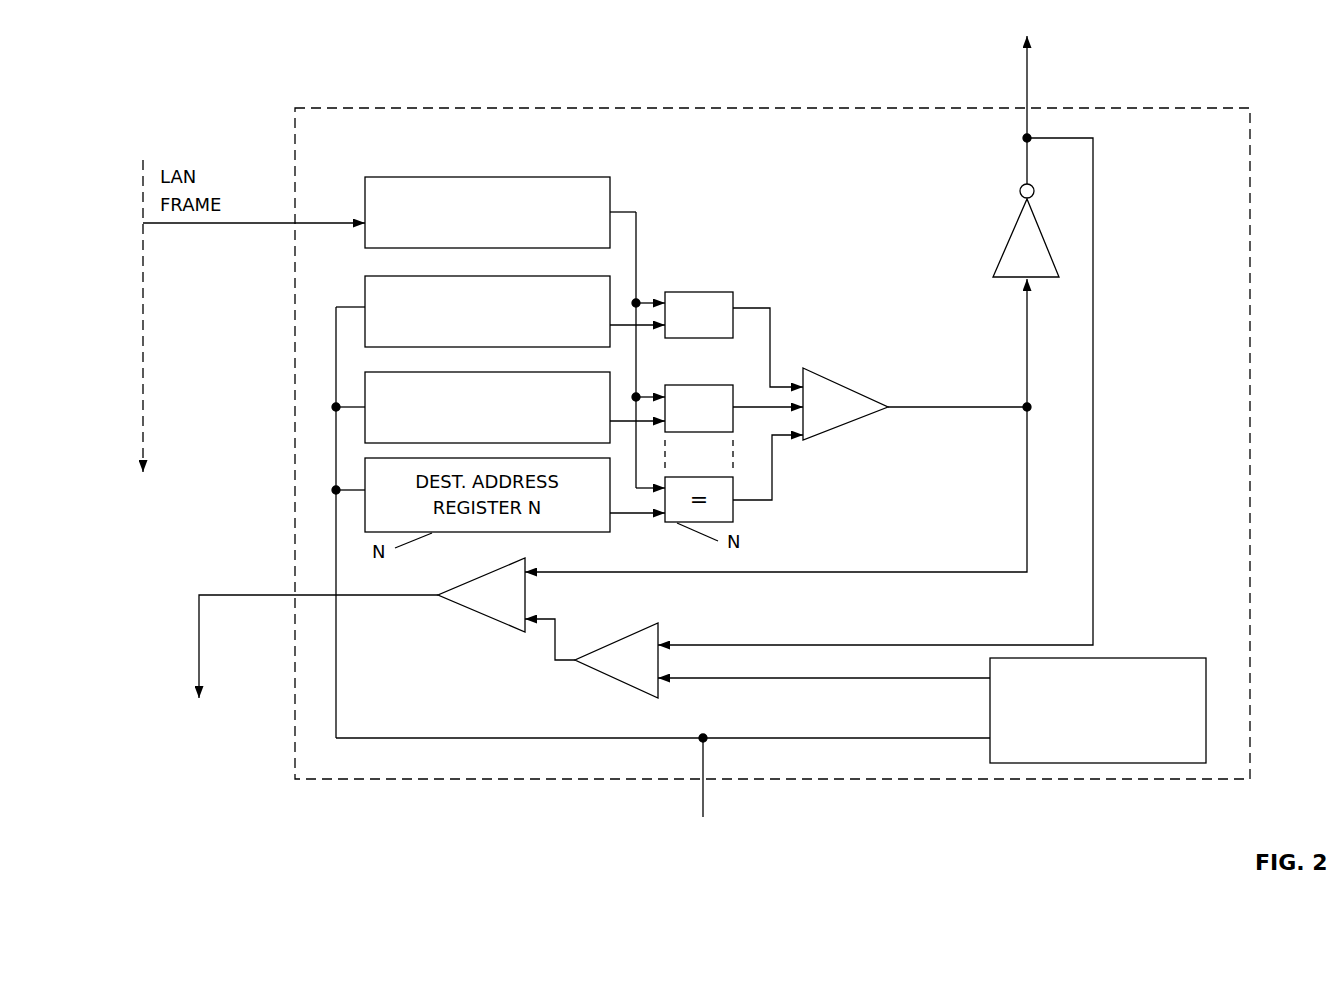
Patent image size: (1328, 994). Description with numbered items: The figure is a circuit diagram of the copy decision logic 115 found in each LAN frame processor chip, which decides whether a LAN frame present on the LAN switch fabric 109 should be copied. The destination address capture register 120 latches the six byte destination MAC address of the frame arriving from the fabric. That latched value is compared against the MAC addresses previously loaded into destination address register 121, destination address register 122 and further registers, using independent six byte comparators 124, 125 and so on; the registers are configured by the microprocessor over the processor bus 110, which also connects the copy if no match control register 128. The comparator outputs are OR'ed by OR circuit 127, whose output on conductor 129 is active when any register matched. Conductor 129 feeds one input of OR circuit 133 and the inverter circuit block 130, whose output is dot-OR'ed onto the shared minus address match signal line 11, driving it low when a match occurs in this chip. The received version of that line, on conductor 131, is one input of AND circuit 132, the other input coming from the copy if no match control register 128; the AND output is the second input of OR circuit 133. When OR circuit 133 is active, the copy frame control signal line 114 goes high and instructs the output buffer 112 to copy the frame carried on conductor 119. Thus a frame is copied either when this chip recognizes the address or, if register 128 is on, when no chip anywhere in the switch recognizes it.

The address match signal line 11 is at (1027, 100).
The LAN switch fabric 109 is at (174, 99).
The processor bus 110 is at (701, 797).
The output buffer 112 is at (190, 660).
The copy frame control signal line 114 is at (200, 670).
The copy decision logic 115 is at (822, 107).
The conductor 119 is at (146, 318).
The destination address capture register 120 is at (565, 178).
The destination address register 1 121 is at (400, 276).
The destination address register 2 122 is at (420, 371).
The comparator 124 is at (690, 291).
The comparator 125 is at (680, 384).
The OR circuit 127 is at (835, 437).
The copy if no match control register 128 is at (1122, 657).
The conductor 129 is at (1027, 373).
The inverter circuit block 130 is at (1005, 246).
The conductor 131 is at (1093, 300).
The AND circuit 132 is at (628, 687).
The OR circuit 133 is at (502, 625).